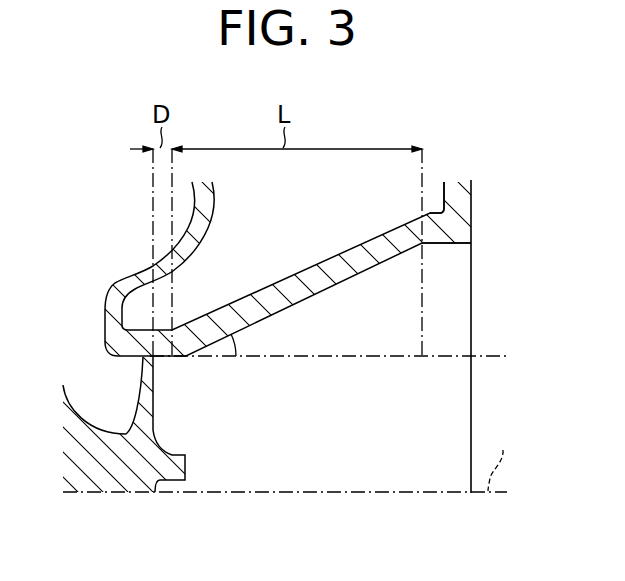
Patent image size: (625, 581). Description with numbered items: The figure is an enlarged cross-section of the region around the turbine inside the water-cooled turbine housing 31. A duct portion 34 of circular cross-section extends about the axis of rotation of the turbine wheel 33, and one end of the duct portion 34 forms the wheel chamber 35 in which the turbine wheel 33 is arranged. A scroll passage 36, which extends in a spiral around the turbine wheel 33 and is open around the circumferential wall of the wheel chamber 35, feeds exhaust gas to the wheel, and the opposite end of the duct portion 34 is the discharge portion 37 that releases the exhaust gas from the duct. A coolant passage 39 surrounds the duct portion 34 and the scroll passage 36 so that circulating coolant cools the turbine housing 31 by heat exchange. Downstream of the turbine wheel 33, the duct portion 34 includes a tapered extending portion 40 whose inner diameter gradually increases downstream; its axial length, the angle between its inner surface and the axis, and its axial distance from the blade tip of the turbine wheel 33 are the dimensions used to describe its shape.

The turbine housing 31 is at (472, 198).
The turbine wheel 33 is at (187, 468).
The duct portion 34 is at (333, 436).
The wheel chamber 35 is at (123, 362).
The scroll passage 36 is at (142, 232).
The discharge portion 37 is at (448, 243).
The coolant passage 39 is at (291, 246).
The extending portion 40 is at (320, 292).